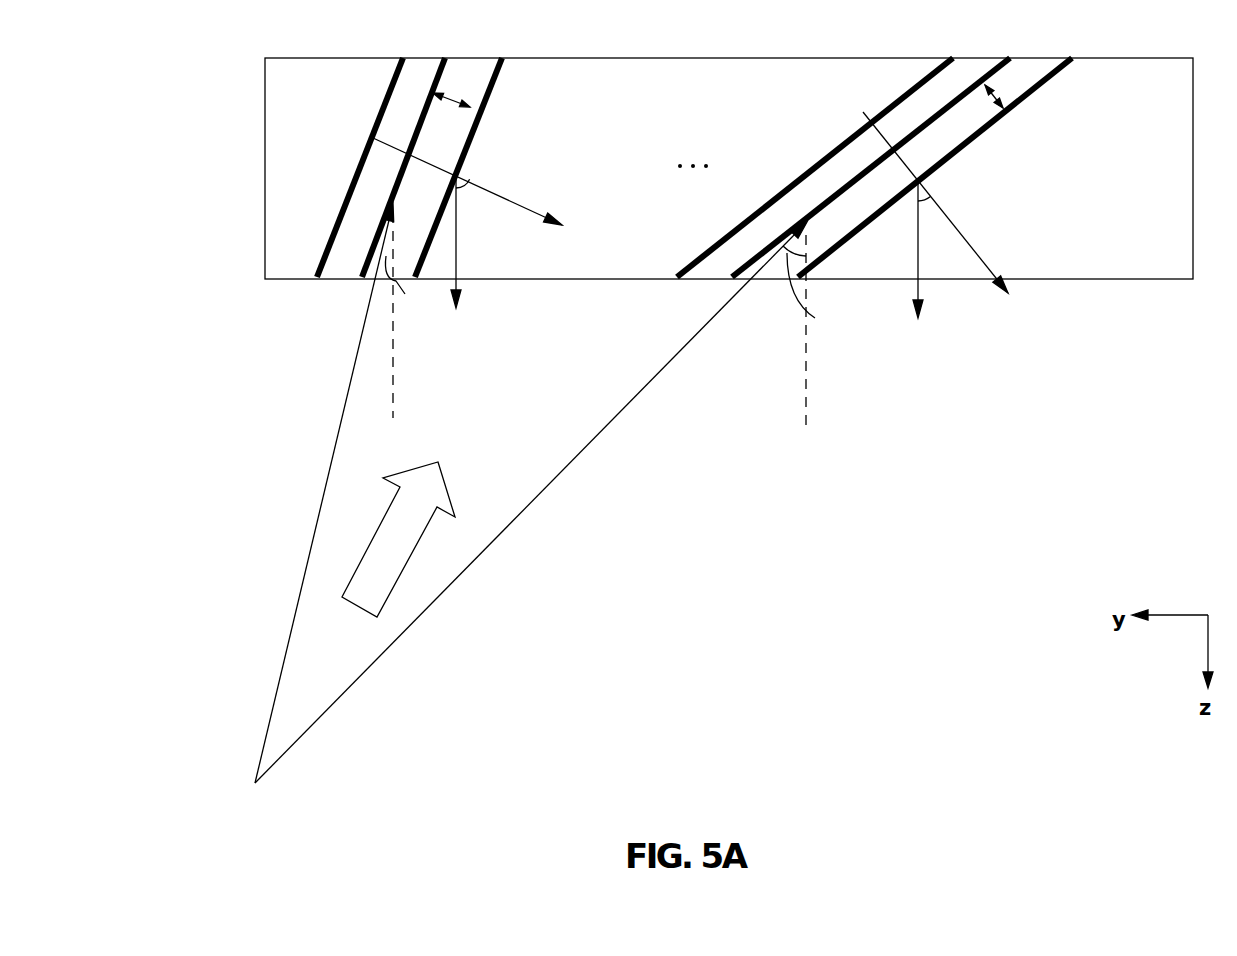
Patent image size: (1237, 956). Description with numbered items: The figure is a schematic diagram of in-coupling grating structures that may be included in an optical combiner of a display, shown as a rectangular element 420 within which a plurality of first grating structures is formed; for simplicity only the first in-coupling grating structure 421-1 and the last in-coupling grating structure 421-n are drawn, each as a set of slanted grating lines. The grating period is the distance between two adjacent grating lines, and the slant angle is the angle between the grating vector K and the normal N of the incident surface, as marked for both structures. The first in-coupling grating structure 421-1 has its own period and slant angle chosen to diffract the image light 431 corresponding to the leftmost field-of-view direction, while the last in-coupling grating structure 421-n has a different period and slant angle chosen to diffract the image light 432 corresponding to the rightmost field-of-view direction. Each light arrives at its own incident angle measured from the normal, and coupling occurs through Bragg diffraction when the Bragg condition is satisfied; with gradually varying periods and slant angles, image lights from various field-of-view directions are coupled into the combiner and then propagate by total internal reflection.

The waveguide 420 is at (266, 124).
The first in-coupling grating structure 421-1 is at (533, 29).
The last in-coupling grating structure 421-n is at (1102, 26).
The image light 431 is at (308, 547).
The image light 432 is at (523, 517).